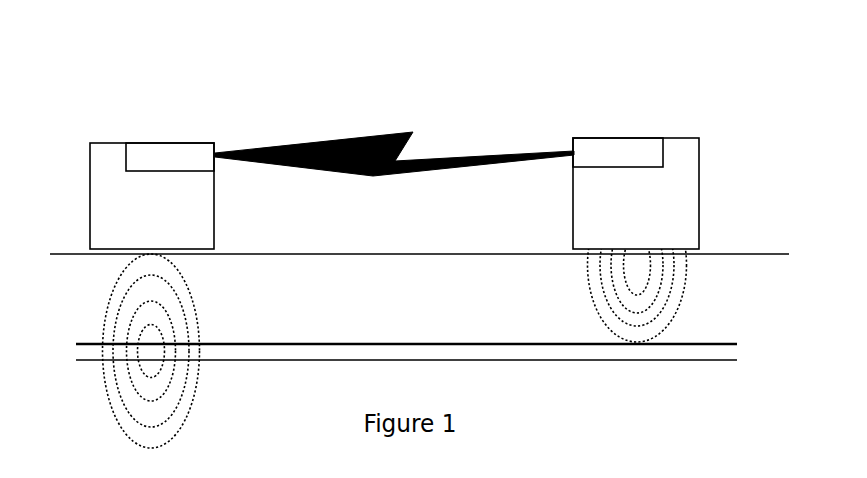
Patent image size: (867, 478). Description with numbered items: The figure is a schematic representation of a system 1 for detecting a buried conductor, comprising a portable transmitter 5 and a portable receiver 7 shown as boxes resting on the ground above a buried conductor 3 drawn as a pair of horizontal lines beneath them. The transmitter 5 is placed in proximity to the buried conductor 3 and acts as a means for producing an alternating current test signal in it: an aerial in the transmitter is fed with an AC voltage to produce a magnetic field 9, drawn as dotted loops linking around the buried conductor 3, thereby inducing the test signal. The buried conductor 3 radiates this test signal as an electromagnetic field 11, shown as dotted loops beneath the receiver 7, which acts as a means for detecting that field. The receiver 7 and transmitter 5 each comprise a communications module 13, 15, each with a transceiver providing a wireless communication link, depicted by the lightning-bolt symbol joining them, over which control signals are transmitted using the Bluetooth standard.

The system for detecting a buried conductor 1 is at (99, 72).
The buried conductor 3 is at (400, 352).
The portable transmitter 5 is at (693, 152).
The portable receiver 7 is at (100, 163).
The magnetic field 9 is at (672, 302).
The electromagnetic field 11 is at (120, 312).
The communications module 13 is at (190, 150).
The communications module 15 is at (600, 148).